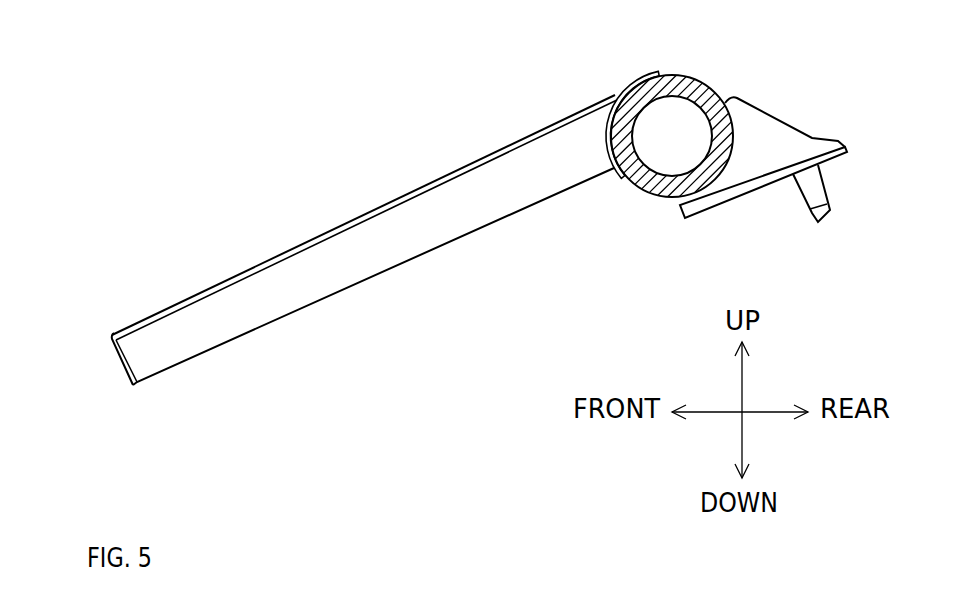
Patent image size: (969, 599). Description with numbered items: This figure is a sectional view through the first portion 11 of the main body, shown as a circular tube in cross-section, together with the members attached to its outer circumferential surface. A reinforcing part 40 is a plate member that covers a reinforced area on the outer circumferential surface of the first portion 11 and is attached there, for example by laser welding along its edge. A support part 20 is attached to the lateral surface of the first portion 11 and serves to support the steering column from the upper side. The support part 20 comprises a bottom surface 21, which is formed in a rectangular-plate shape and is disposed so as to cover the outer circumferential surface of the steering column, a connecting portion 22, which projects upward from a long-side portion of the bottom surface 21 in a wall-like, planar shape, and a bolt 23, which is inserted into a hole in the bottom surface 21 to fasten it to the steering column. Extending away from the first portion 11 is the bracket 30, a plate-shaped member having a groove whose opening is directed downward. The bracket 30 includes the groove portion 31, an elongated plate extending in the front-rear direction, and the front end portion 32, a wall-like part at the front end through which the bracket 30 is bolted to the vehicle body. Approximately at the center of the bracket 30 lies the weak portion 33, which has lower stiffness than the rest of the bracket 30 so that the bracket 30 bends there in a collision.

The first portion 11 is at (698, 76).
The support part 20 is at (791, 131).
The bottom surface 21 is at (845, 147).
The connecting portion 22 is at (757, 130).
The bolt 23 is at (827, 183).
The bracket 30 is at (324, 240).
The groove portion 31 is at (197, 290).
The front end portion 32 is at (113, 358).
The weak portion 33 is at (385, 233).
The reinforcing part 40 is at (641, 78).